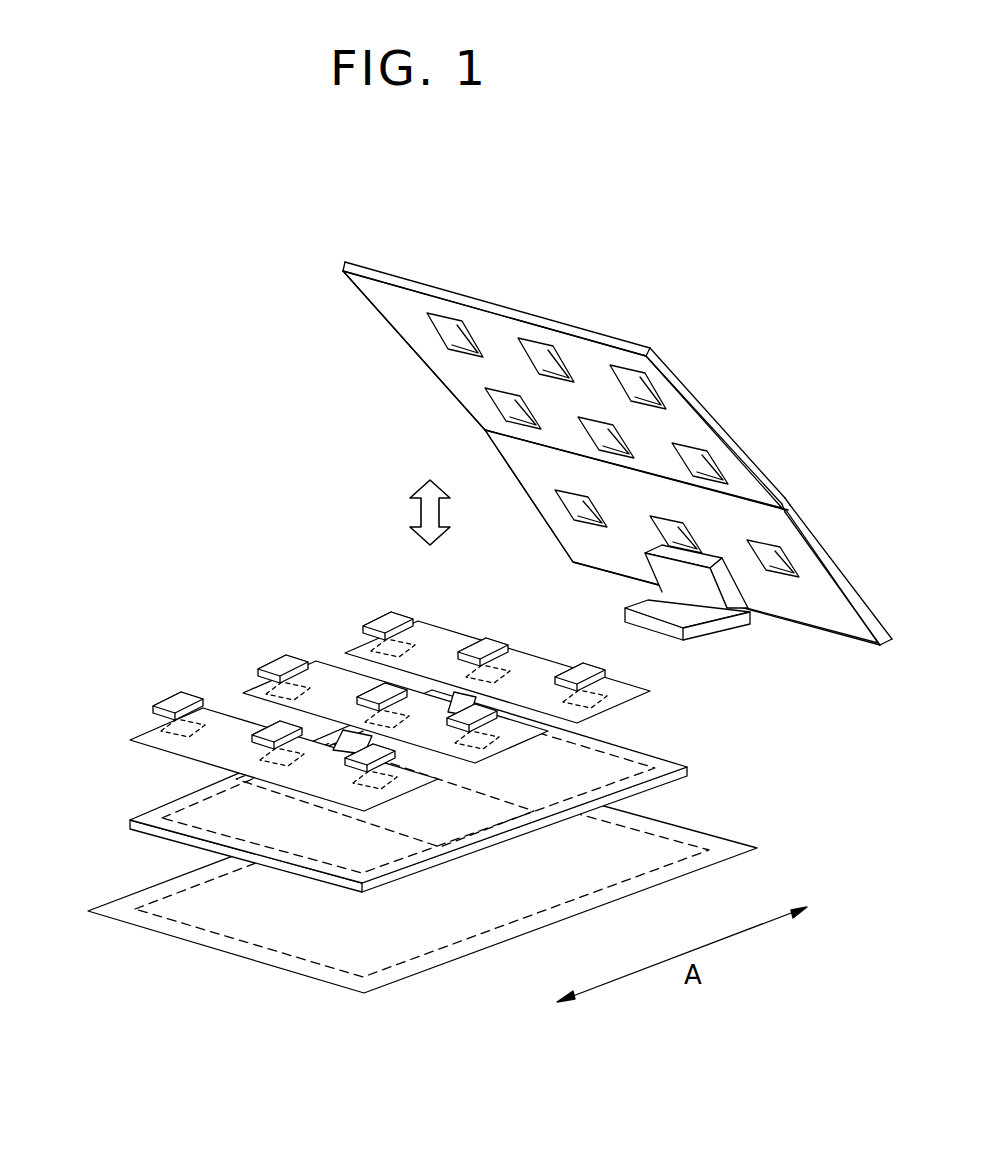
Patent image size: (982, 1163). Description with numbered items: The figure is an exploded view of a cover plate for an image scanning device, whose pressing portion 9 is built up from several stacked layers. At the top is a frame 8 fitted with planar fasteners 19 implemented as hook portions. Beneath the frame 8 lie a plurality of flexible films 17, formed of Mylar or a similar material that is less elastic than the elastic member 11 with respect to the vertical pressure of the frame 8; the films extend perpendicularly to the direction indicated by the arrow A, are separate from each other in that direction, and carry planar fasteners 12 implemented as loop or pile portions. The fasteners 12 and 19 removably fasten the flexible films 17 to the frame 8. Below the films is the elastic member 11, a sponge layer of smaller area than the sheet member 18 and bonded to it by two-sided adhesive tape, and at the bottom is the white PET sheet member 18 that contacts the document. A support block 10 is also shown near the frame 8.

The frame 8 is at (672, 382).
The planar fasteners (hook portions) 19 is at (453, 345).
The support block 10 is at (745, 628).
The pressing portion 9 is at (100, 805).
The elastic member 11 is at (688, 773).
The flexible films 17 is at (640, 700).
The planar fasteners (loop or pile portions) 12 is at (587, 664).
The sheet member 18 is at (520, 938).